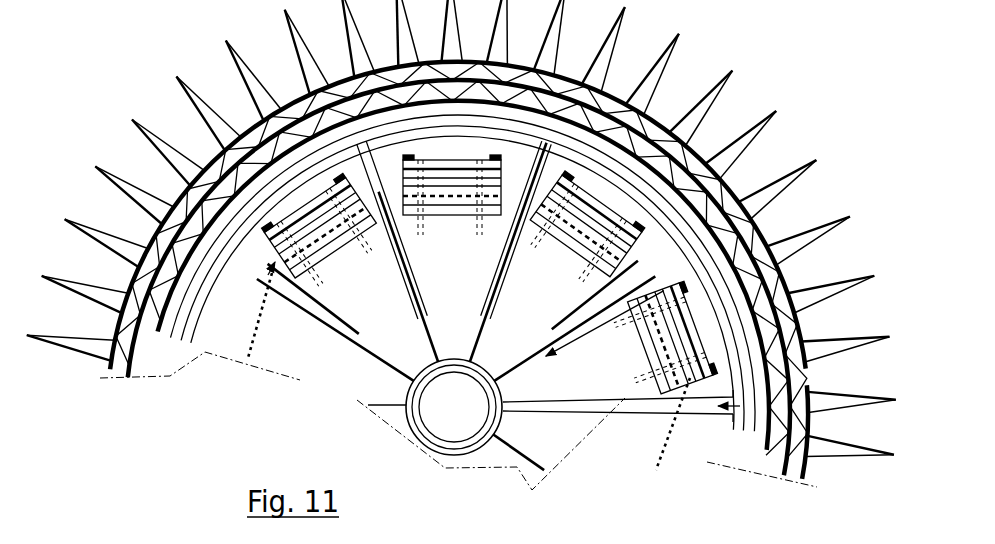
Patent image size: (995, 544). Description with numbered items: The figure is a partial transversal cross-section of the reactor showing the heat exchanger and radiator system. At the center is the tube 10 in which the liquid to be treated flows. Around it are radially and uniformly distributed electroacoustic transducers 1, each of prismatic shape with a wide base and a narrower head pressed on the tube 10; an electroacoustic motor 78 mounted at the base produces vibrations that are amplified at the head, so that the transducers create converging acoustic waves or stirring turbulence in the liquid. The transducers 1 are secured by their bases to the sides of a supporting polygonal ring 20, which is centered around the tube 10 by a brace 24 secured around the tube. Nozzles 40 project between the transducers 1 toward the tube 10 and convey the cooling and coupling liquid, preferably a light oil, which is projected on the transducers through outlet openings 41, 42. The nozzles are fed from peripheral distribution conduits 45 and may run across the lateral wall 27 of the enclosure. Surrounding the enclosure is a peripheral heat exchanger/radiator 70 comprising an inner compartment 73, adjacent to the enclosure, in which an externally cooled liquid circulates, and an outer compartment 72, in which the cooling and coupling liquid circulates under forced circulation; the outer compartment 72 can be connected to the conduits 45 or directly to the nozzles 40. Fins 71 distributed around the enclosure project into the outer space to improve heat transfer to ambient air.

The electroacoustic transducer 1 is at (363, 296).
The tube 10 is at (478, 428).
The ring 20 is at (258, 340).
The brace 24 is at (507, 392).
The lateral wall 27 is at (318, 133).
The nozzle 40 is at (662, 408).
The outlet opening 41 is at (257, 276).
The outlet opening 42 is at (490, 285).
The peripheral distribution conduit 45 is at (432, 139).
The peripheral heat exchanger/radiator 70 is at (792, 488).
The fin 71 is at (192, 97).
The outer compartment 72 is at (117, 377).
The inner compartment 73 is at (148, 352).
The electroacoustic motor 78 is at (287, 203).